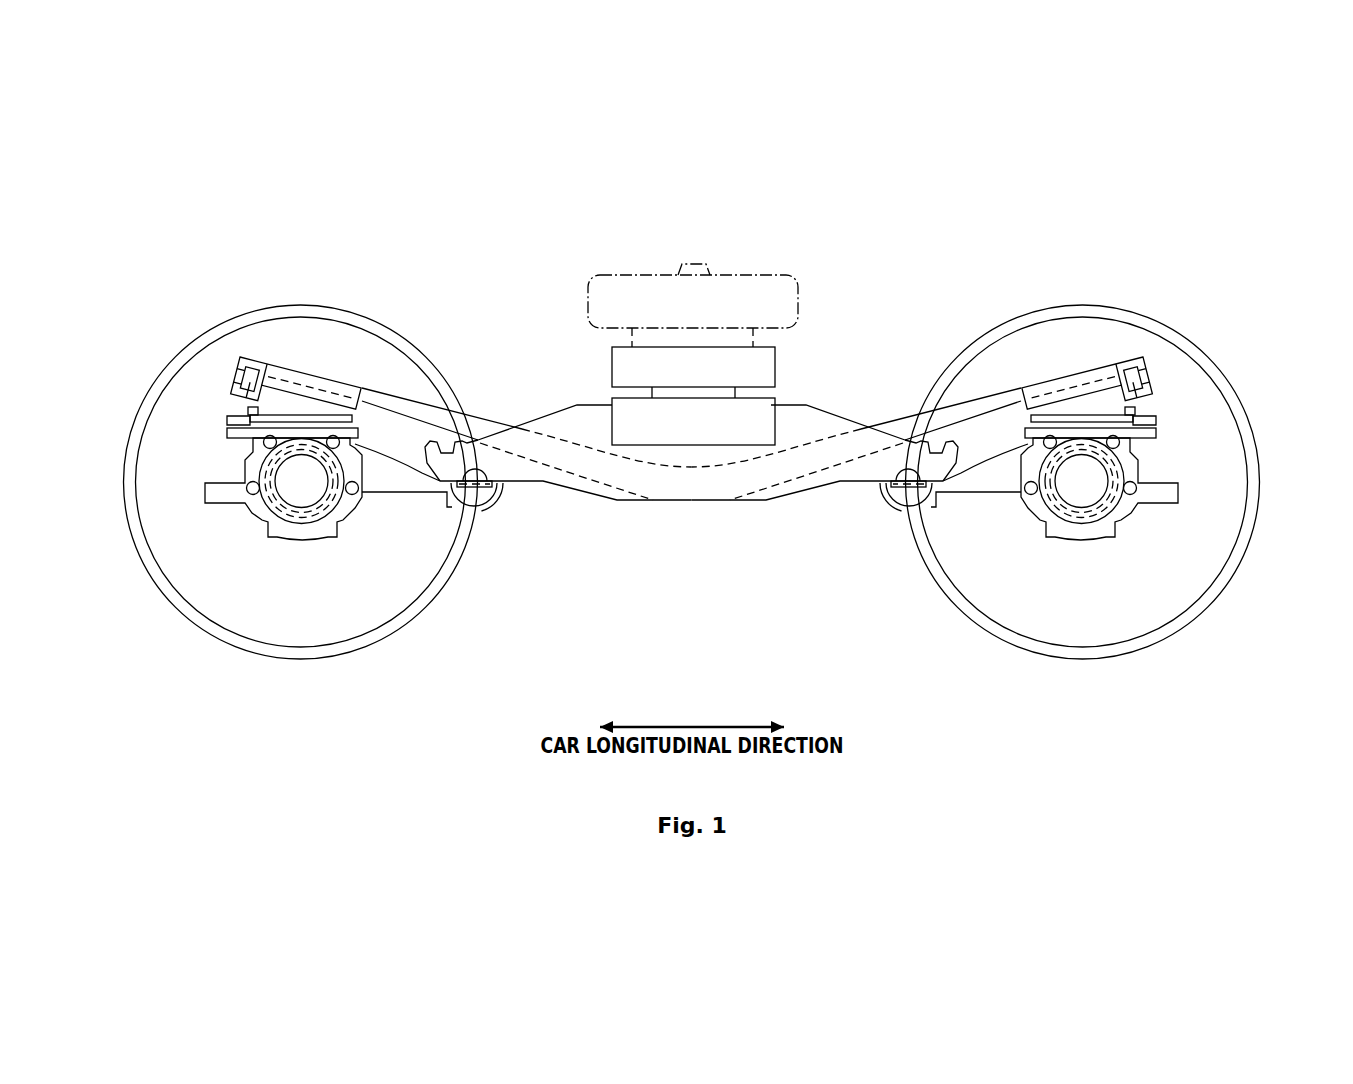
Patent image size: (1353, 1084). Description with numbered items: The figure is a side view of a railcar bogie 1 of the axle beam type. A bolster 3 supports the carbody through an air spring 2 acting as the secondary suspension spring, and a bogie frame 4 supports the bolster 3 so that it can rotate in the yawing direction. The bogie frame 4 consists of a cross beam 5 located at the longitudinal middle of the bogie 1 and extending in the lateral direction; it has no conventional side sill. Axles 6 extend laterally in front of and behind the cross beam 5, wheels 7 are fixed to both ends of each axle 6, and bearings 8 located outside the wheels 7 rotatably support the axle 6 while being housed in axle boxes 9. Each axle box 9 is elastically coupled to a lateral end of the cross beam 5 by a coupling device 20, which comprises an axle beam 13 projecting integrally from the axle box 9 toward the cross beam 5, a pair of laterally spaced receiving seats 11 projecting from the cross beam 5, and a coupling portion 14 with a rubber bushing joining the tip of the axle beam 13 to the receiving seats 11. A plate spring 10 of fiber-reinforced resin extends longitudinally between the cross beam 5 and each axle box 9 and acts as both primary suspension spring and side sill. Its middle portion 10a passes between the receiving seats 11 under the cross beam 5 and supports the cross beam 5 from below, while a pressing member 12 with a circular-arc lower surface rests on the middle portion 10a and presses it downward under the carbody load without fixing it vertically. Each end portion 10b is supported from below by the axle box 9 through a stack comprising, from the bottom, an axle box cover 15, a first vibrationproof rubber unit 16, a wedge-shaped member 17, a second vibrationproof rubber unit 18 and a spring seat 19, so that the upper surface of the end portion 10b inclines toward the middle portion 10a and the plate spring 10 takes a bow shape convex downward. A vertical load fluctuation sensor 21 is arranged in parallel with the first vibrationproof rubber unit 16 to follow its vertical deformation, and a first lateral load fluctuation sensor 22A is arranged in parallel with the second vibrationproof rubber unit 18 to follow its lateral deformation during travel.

The railcar bogie 1 is at (692, 433).
The air spring 2 is at (764, 275).
The bolster 3 is at (777, 367).
The bogie frame 4 is at (722, 370).
The cross beam 5 is at (612, 400).
The axle 6 is at (262, 515).
The wheel 7 is at (207, 633).
The bearing 8 is at (258, 470).
The axle box 9 is at (314, 537).
The plate spring 10 is at (483, 420).
The longitudinal direction middle portion of the plate spring 10a is at (678, 483).
The longitudinal direction end portion of the plate spring 10b is at (320, 385).
The receiving seat 11 is at (580, 493).
The pressing member 12 is at (732, 458).
The axle beam 13 is at (392, 484).
The coupling portion 14 is at (478, 490).
The axle box cover 15 is at (226, 433).
The first vibrationproof rubber unit 16 is at (353, 420).
The wedge-shaped member 17 is at (332, 412).
The second vibrationproof rubber unit 18 is at (303, 372).
The spring seat 19 is at (252, 361).
The coupling device 20 is at (508, 506).
The vertical load fluctuation sensor 21 is at (216, 418).
The first lateral load fluctuation sensor 22A is at (230, 386).